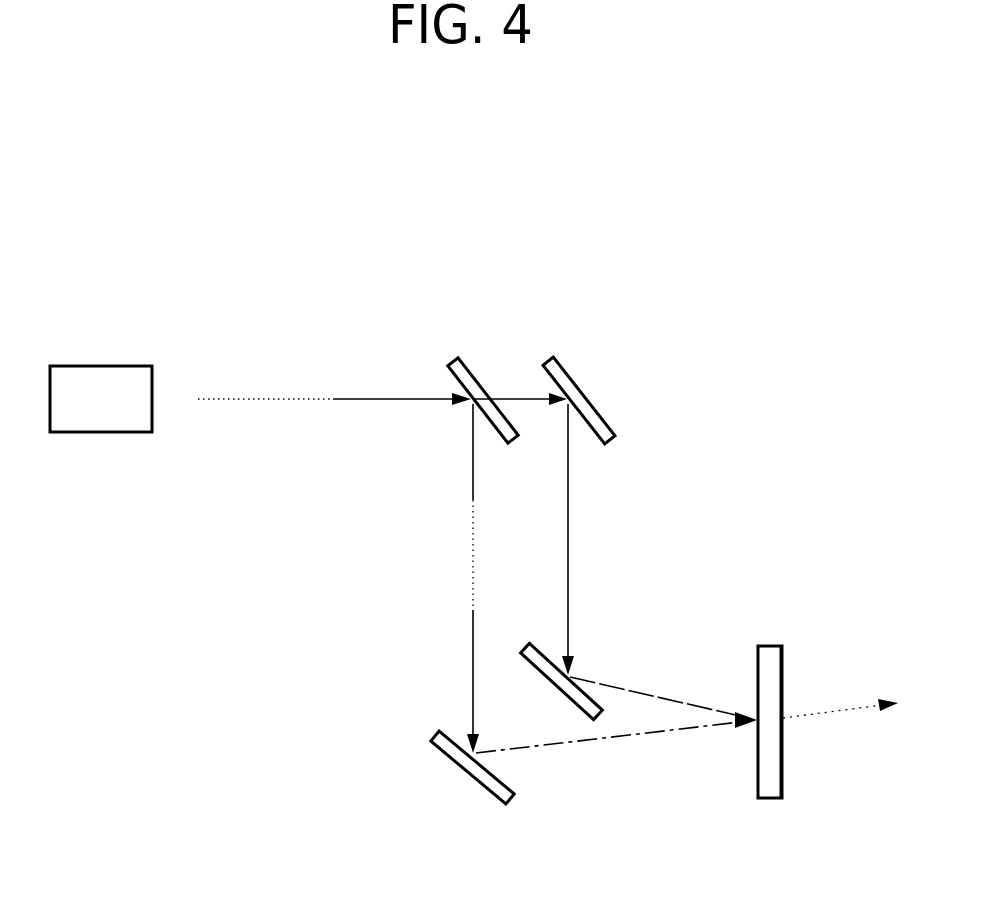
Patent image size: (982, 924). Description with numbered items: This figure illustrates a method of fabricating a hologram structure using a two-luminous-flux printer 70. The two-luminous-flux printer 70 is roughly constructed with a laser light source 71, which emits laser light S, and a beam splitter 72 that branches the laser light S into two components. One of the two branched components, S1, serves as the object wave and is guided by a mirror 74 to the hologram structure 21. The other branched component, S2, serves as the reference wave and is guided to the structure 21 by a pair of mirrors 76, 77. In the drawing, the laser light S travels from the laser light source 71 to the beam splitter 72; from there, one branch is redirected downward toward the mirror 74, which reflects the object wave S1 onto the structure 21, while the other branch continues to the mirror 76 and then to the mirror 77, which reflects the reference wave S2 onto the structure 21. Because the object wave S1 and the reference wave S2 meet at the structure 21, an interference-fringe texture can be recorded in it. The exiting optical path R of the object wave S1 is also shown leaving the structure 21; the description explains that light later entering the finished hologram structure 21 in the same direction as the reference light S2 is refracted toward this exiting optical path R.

The two-luminous-flux printer 70 is at (128, 190).
The laser light source 71 is at (108, 365).
The beam splitter 72 is at (472, 365).
The mirror 76 is at (615, 442).
The mirror 77 is at (547, 681).
The mirror 74 is at (445, 753).
The hologram structure 21 is at (770, 799).
The laser light S is at (297, 398).
The object wave S1 is at (620, 738).
The reference wave S2 is at (655, 698).
The exiting optical path R is at (832, 710).